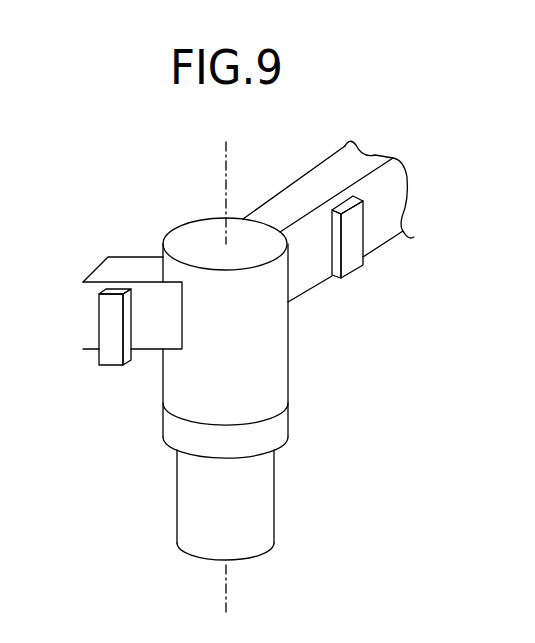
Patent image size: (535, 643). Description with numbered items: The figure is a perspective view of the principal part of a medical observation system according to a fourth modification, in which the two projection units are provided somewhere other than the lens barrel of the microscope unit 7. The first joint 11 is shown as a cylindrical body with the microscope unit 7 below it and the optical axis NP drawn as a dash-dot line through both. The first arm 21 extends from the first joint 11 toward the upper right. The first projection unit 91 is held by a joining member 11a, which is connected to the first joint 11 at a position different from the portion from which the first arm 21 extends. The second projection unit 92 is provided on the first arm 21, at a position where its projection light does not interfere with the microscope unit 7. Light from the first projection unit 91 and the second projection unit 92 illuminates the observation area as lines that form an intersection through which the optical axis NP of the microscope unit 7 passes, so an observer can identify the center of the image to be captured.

The microscope unit 7 is at (260, 497).
The first joint 11 is at (273, 343).
The joining member 11a is at (125, 270).
The first arm 21 is at (323, 182).
The first projection unit 91 is at (110, 332).
The second projection unit 92 is at (358, 267).
The optical axis NP is at (225, 157).